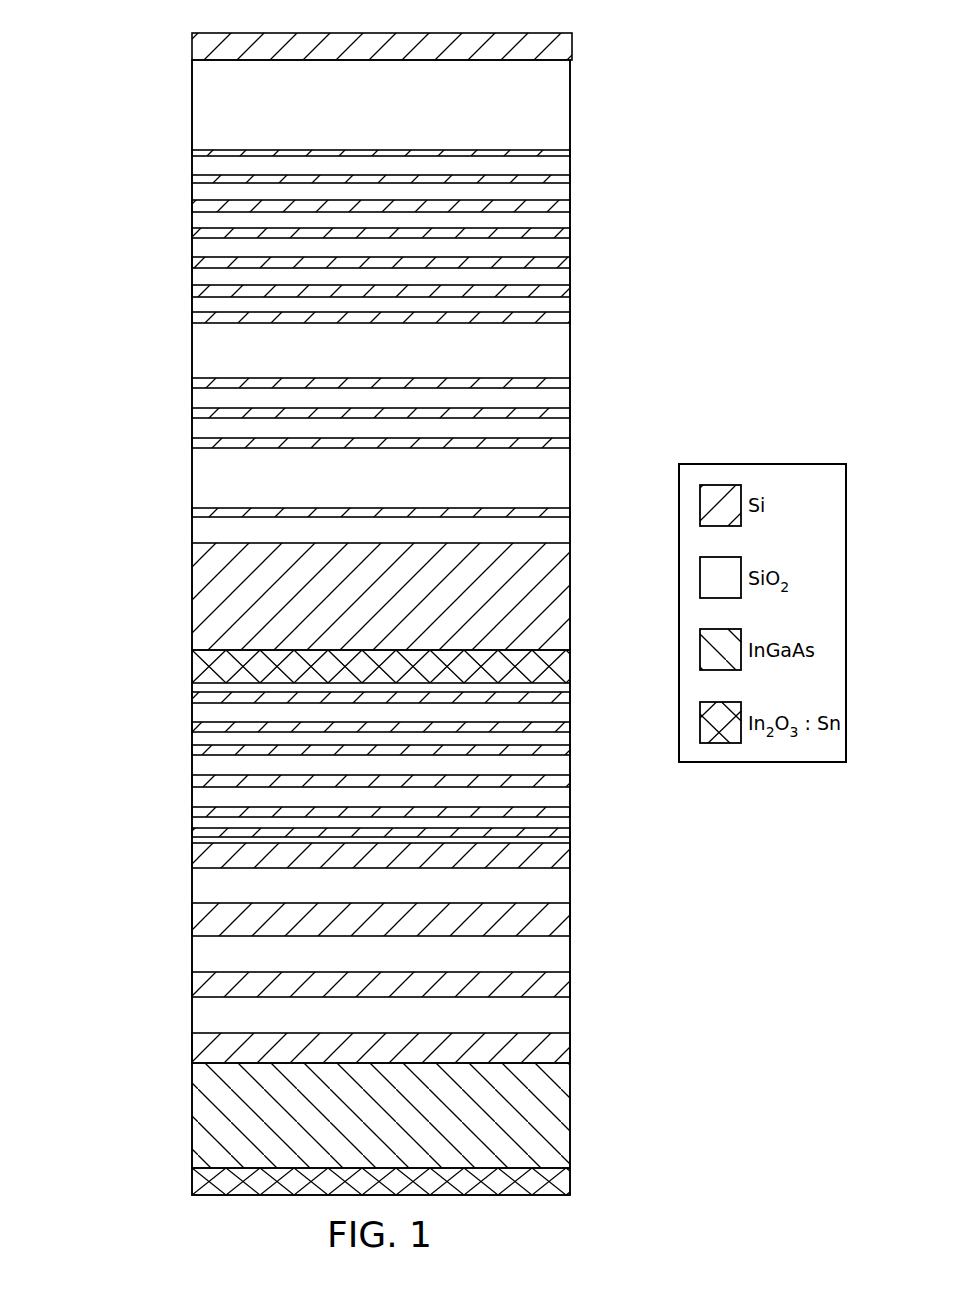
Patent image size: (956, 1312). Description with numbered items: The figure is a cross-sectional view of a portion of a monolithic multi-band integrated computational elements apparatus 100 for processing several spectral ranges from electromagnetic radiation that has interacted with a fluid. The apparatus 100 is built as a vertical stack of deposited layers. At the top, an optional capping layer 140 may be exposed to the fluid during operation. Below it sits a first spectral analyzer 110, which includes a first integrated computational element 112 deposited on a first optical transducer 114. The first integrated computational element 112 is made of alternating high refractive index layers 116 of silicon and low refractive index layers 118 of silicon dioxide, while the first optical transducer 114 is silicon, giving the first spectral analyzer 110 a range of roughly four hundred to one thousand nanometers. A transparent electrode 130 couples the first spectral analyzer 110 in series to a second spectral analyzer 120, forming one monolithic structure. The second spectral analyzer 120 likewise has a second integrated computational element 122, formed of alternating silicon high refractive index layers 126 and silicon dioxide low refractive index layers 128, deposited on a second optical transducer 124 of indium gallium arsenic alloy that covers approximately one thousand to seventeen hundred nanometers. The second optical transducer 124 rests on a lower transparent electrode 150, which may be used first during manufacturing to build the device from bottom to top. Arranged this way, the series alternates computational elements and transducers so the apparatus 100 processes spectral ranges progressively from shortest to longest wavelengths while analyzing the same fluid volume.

The apparatus 100 is at (688, 209).
The first spectral analyzer 110 is at (586, 60).
The first integrated computational element 112 is at (90, 62).
The first optical transducer 114 is at (192, 600).
The high refractive index layers 116 is at (192, 152).
The low refractive index layers 118 is at (192, 92).
The second spectral analyzer 120 is at (586, 683).
The second integrated computational element 122 is at (90, 683).
The second optical transducer 124 is at (192, 1118).
The high refractive index layers 126 is at (194, 697).
The low refractive index layers 128 is at (194, 688).
The transparent electrode 130 is at (563, 668).
The capping layer 140 is at (565, 45).
The transparent electrode 150 is at (563, 1183).